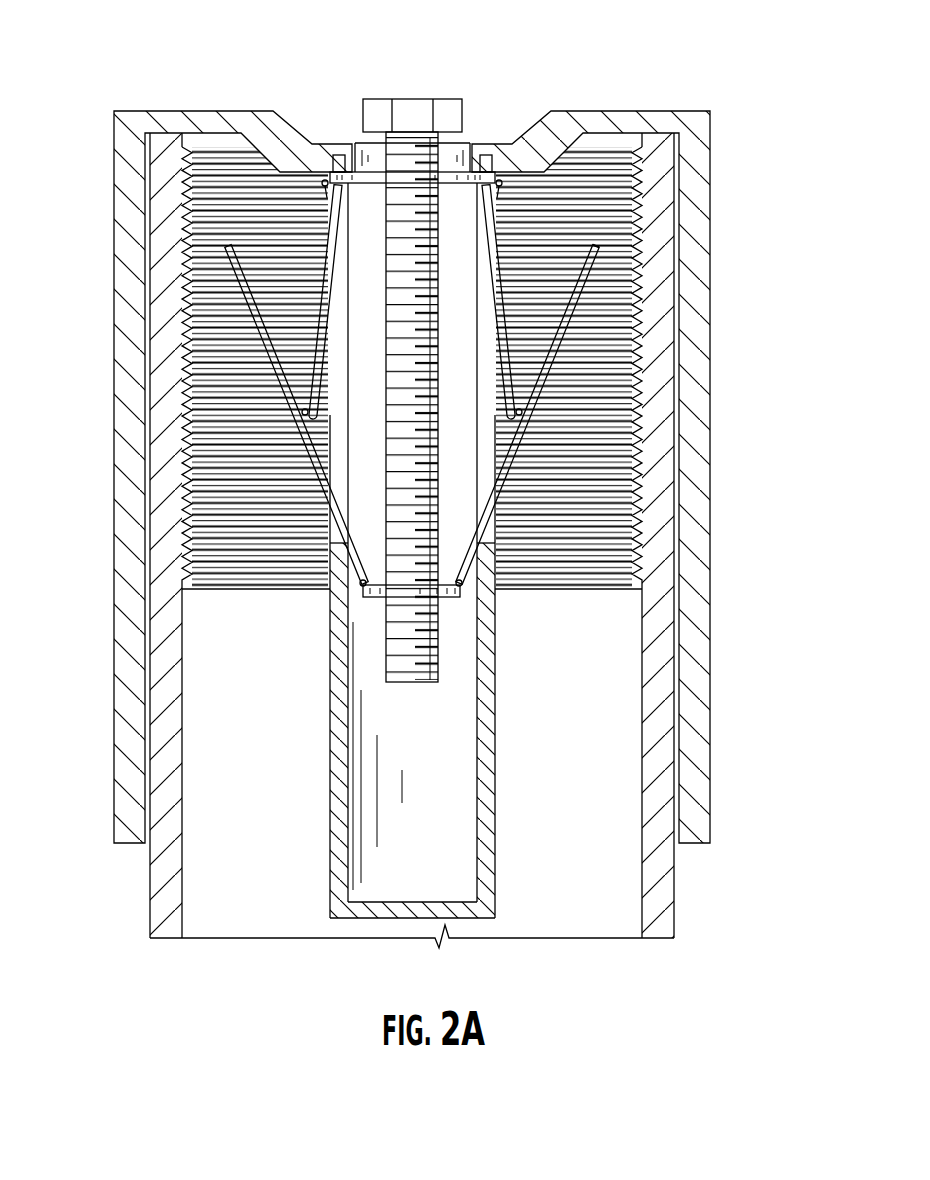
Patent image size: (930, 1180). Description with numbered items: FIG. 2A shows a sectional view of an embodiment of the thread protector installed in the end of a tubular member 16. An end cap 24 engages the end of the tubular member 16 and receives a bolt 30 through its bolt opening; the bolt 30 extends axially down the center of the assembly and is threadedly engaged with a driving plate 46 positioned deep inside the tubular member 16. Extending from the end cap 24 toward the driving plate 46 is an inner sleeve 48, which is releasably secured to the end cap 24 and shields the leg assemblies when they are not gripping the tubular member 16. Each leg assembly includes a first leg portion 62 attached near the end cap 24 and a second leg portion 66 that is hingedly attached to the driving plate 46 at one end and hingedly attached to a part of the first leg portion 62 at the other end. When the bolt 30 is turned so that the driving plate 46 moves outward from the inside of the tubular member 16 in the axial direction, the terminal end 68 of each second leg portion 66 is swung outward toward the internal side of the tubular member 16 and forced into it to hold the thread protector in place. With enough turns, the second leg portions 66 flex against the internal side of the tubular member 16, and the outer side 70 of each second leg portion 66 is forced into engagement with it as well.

The tubular member 16 is at (658, 565).
The end cap 24 is at (603, 120).
The bolt 30 is at (425, 683).
The driving plate 46 is at (385, 594).
The inner sleeve 48 is at (487, 752).
The first leg portion 62 is at (328, 252).
The second leg portion 66 is at (245, 297).
The terminal end of second leg portion 68 is at (602, 248).
The outer side of second leg portion 70 is at (592, 298).